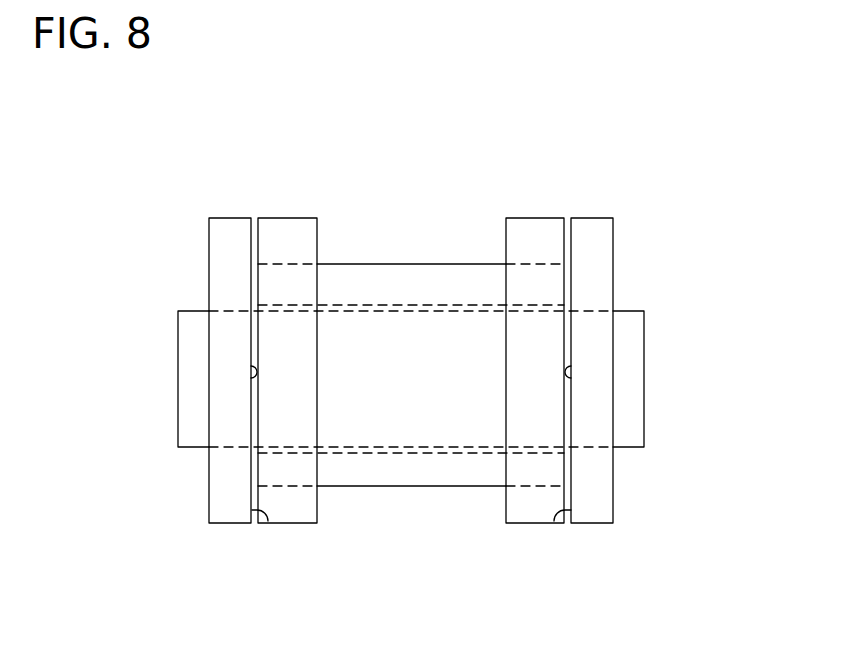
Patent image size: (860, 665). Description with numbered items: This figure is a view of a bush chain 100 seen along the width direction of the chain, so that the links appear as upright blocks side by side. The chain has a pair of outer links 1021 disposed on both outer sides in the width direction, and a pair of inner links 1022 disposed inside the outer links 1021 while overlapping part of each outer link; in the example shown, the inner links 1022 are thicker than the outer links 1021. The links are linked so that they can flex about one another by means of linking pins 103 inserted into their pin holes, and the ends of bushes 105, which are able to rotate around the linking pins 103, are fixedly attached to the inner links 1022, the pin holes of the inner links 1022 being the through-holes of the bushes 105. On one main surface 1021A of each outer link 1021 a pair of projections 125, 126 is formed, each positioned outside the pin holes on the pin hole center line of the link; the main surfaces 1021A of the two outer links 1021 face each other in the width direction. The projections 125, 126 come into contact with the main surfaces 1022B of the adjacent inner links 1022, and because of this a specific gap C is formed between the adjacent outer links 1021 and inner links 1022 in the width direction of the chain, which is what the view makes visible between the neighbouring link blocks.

The bush chain 100 is at (405, 162).
The outer links 1021 is at (228, 223).
The inner links 1022 is at (287, 223).
The main surface of outer link 1021A is at (263, 526).
The main surface of inner link 1022B is at (258, 492).
The linking pins 103 is at (632, 438).
The bushes 105 is at (421, 270).
The projection 125 is at (572, 372).
The projection 126 is at (252, 372).
The gap C is at (255, 212).